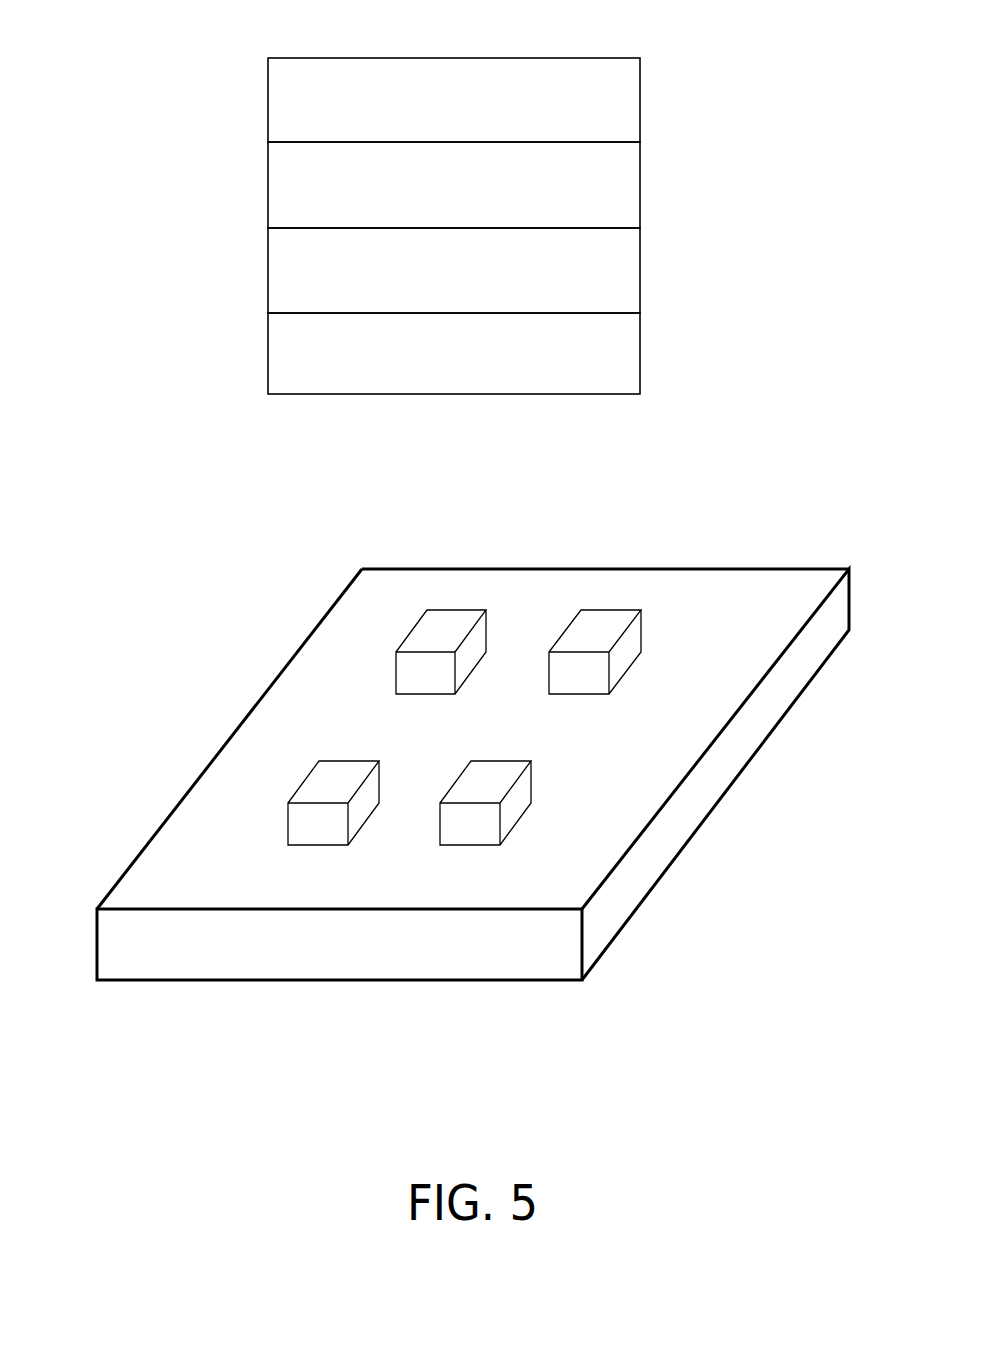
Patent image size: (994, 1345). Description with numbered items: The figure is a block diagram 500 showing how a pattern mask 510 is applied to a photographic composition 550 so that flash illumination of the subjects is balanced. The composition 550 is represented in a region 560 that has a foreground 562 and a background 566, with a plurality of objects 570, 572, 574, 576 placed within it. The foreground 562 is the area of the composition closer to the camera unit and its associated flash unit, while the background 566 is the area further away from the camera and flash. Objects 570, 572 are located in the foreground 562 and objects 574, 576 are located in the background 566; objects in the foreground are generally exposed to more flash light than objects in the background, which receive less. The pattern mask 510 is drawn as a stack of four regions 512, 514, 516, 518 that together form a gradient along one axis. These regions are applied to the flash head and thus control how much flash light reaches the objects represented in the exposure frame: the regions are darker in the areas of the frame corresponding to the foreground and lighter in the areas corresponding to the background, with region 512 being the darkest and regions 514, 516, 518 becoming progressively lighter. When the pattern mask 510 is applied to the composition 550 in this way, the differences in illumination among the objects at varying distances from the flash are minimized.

The block diagram 500 is at (127, 1033).
The pattern mask 510 is at (360, 57).
The first region 512 is at (268, 353).
The second region 514 is at (268, 271).
The third region 516 is at (268, 188).
The fourth region 518 is at (268, 100).
The composition 550 is at (472, 558).
The region 560 is at (725, 790).
The foreground 562 is at (202, 827).
The background 566 is at (343, 654).
The object 570 is at (302, 823).
The object 572 is at (453, 823).
The object 574 is at (412, 673).
The object 576 is at (568, 673).